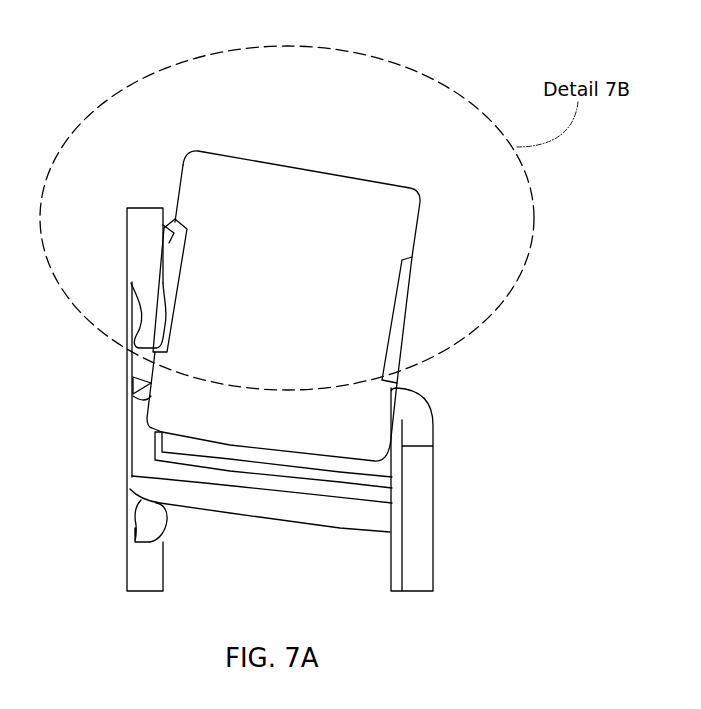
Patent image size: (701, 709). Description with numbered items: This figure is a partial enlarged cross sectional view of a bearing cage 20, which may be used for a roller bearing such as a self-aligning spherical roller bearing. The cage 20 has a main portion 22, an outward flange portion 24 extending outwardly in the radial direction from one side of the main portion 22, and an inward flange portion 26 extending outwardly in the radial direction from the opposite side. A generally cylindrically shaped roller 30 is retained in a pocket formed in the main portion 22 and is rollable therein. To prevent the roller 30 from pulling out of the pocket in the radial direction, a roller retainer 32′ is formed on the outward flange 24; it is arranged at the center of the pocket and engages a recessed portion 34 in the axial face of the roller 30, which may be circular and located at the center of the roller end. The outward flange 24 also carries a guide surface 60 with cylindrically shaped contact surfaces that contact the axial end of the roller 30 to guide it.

The cage 20 is at (130, 310).
The main portion 22 is at (208, 497).
The outward flange portion 24 is at (142, 207).
The inward flange portion 26 is at (410, 396).
The roller 30 is at (255, 183).
The roller retainer 32′ is at (143, 325).
The recessed portion 34 is at (173, 227).
The guide surface 60 is at (162, 250).